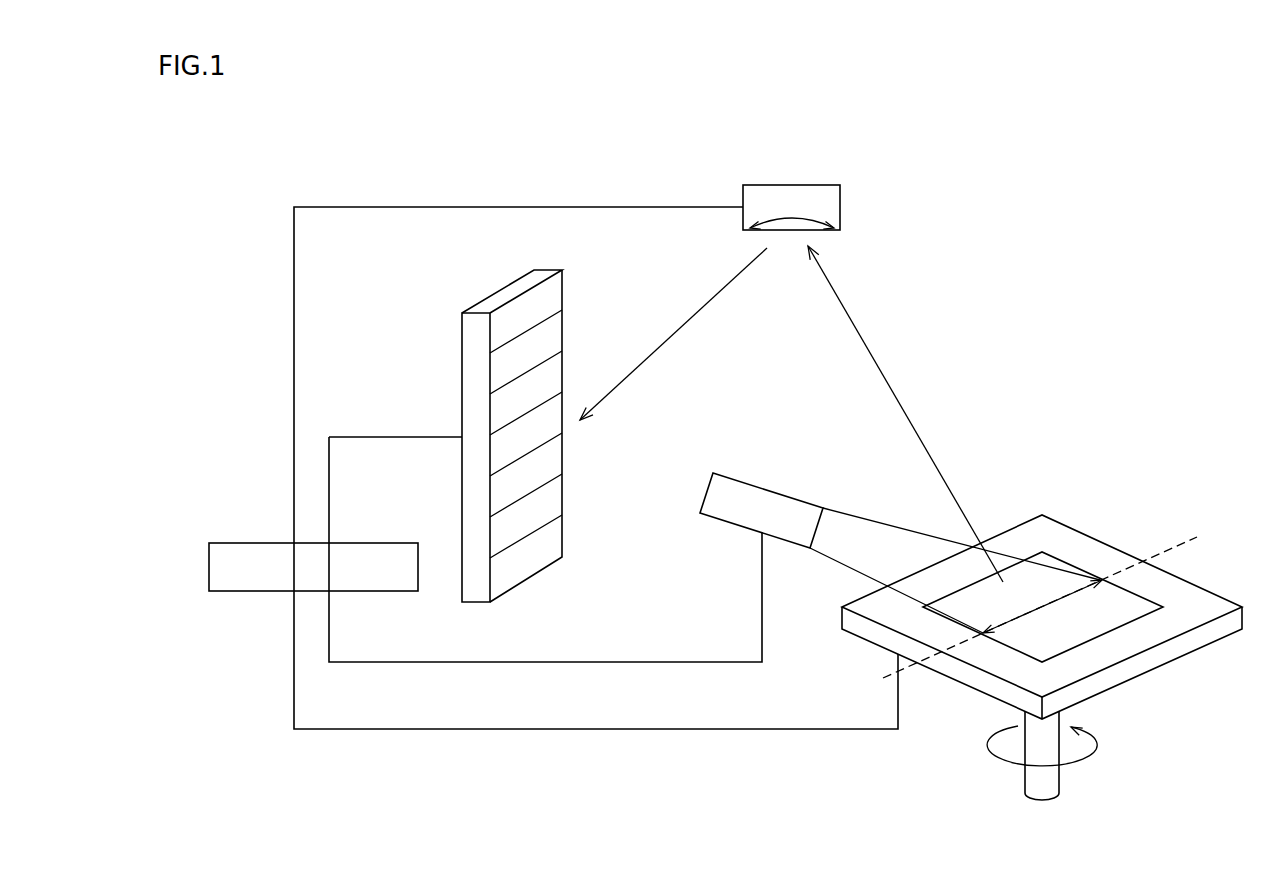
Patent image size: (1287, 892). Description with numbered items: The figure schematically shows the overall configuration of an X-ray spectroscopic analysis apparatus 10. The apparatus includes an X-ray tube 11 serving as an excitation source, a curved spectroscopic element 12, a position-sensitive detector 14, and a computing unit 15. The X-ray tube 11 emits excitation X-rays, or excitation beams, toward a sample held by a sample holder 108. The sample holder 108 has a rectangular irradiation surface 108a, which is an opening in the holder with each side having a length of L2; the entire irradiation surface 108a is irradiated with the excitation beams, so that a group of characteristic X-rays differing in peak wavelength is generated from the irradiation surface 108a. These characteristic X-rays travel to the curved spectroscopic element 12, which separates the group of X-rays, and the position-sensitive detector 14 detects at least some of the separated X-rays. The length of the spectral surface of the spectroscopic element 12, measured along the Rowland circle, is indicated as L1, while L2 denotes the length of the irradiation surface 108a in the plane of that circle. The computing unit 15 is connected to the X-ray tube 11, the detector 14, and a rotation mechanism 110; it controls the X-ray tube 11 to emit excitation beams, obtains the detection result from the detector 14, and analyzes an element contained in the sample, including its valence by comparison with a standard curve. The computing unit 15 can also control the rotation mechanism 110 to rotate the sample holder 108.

The X-ray spectroscopic analysis apparatus 10 is at (326, 160).
The X-ray tube 11 is at (760, 488).
The curved spectroscopic element 12 is at (790, 185).
The position-sensitive detector 14 is at (498, 291).
The computing unit 15 is at (372, 543).
The sample holder 108 is at (1081, 533).
The irradiation surface 108a is at (1102, 620).
The rotation mechanism 110 is at (1059, 785).
The length of spectral surface L1 is at (791, 407).
The length of irradiation surface L2 is at (956, 571).